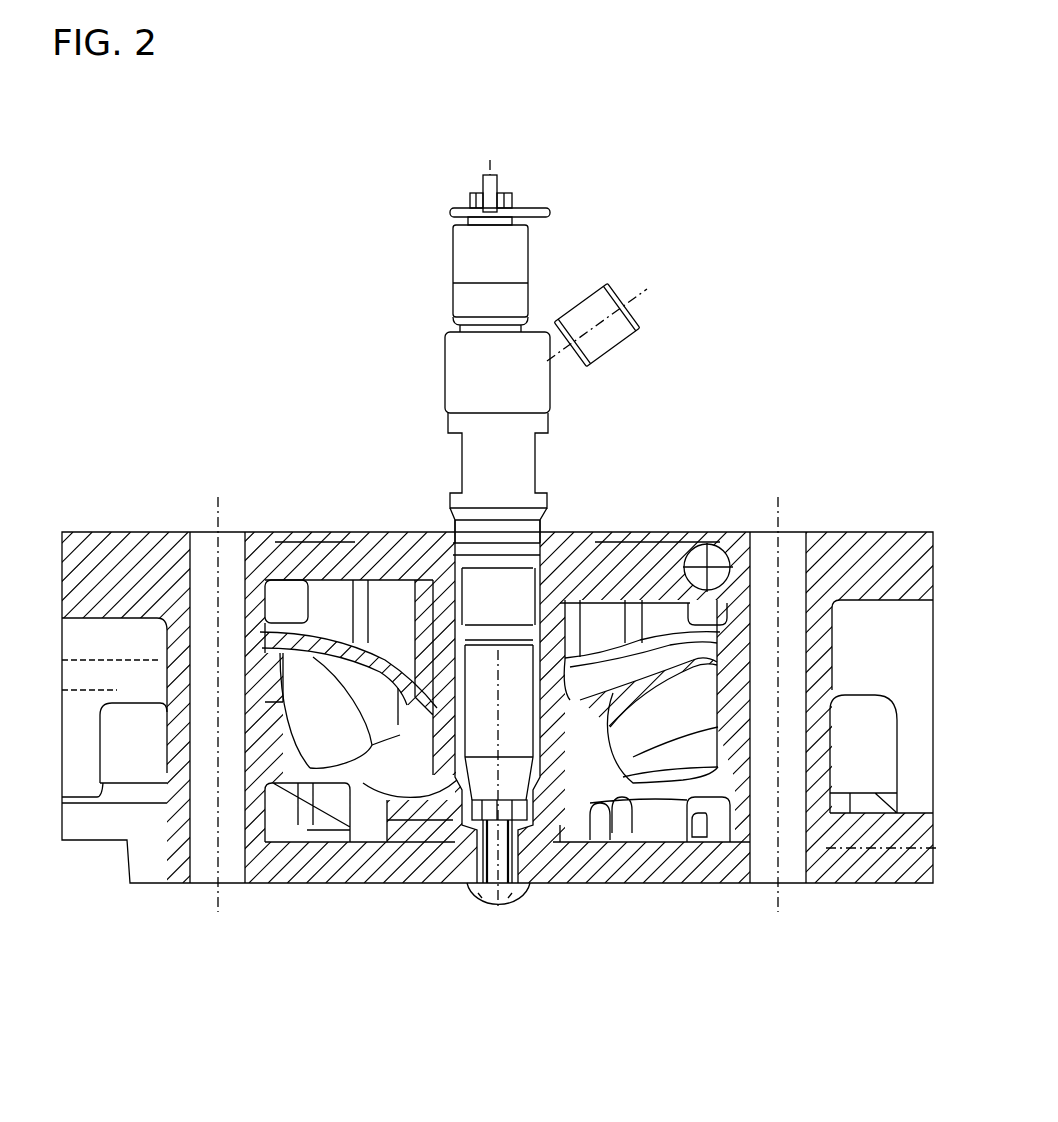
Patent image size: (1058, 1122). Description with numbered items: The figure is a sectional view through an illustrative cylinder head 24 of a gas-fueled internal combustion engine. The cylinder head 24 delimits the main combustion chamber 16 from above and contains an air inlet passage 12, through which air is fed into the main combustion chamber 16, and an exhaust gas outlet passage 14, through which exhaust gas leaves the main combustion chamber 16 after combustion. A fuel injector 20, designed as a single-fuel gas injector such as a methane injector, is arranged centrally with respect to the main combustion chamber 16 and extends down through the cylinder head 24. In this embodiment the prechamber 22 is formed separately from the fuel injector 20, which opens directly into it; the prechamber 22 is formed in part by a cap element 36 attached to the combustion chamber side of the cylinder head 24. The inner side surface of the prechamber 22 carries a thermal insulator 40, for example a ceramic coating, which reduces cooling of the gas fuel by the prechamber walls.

The air inlet passage 12 is at (315, 687).
The exhaust gas outlet passage 14 is at (690, 688).
The main combustion chamber 16 is at (529, 699).
The fuel injector 20 is at (546, 574).
The prechamber 22 is at (518, 898).
The cylinder head 24 is at (168, 538).
The cap element 36 is at (467, 885).
The thermal insulator 40 is at (480, 893).